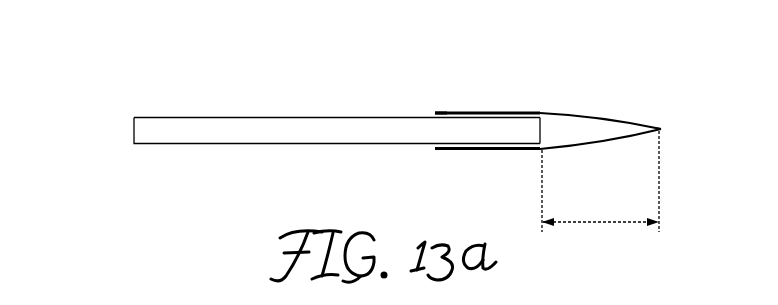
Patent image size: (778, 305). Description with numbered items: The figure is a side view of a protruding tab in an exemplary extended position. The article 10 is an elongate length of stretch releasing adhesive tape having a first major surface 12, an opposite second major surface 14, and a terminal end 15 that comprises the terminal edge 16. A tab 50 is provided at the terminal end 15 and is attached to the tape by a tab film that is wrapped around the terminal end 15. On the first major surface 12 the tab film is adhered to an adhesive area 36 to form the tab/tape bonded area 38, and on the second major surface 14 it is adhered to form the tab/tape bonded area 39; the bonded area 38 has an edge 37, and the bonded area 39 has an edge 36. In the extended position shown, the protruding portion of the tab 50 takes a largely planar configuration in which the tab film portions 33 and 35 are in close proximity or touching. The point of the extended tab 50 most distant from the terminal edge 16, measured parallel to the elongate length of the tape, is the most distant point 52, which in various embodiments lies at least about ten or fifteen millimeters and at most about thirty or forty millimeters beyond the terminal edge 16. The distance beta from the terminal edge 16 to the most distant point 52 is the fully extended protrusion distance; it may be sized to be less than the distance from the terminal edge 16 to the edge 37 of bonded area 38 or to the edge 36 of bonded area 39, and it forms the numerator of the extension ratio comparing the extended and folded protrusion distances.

The article 10 is at (136, 92).
The first major surface 12 is at (213, 144).
The second major surface 14 is at (208, 116).
The terminal end 15 is at (523, 98).
The terminal edge 16 is at (541, 128).
The tab film portion 33 is at (588, 140).
The tab film portion 35 is at (588, 118).
The adhesive area 36 is at (436, 112).
The edge of tab/tape bonded area 37 is at (434, 150).
The tab/tape bonded area 38 is at (490, 151).
The tab/tape bonded area 39 is at (489, 111).
The tab 50 is at (630, 104).
The most distant point 52 is at (661, 129).